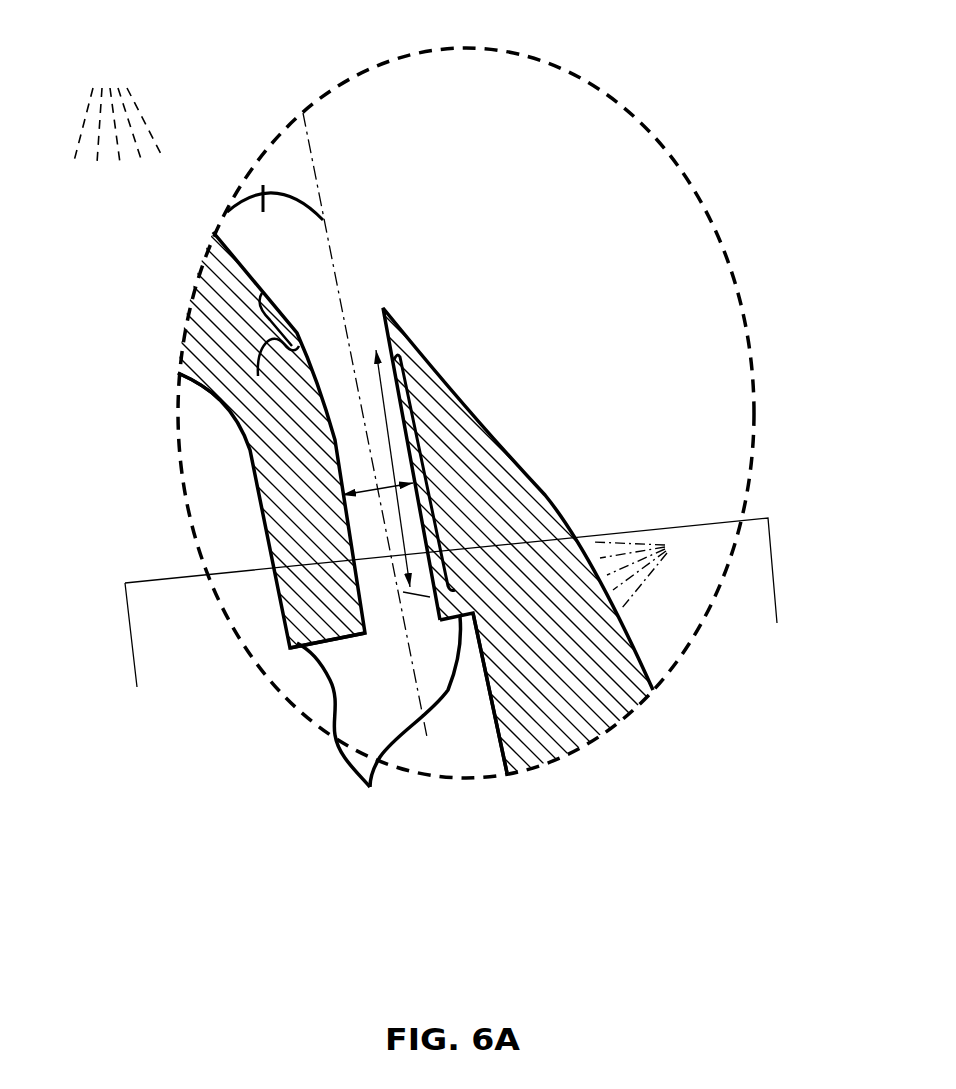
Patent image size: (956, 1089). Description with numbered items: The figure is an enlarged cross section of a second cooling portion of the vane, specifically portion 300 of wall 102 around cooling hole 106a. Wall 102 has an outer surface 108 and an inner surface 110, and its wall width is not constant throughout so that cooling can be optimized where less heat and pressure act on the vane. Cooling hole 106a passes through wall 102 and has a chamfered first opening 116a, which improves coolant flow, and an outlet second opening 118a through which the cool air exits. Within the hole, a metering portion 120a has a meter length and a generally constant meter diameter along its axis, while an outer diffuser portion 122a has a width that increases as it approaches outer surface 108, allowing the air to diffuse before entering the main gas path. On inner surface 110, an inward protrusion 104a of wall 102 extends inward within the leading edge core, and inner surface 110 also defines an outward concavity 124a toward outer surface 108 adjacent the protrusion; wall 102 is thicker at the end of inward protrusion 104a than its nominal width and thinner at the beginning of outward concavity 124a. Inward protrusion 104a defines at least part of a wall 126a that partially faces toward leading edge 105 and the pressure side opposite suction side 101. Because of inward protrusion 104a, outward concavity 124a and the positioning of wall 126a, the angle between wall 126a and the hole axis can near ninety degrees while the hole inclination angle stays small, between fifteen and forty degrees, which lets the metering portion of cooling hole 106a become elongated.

The suction side 101 is at (118, 110).
The wall 102 is at (235, 247).
The inward protrusion 104a is at (286, 609).
The leading edge 105 is at (648, 570).
The cooling hole 106a is at (372, 343).
The outer surface 108 is at (230, 250).
The inner surface 110 is at (215, 397).
The first opening 116a is at (323, 310).
The second opening 118a is at (377, 607).
The metering portion 120a is at (383, 490).
The diffuser portion 122a is at (275, 348).
The outward concavity 124a is at (480, 620).
The wall 126a is at (379, 718).
The portion 300 is at (702, 80).